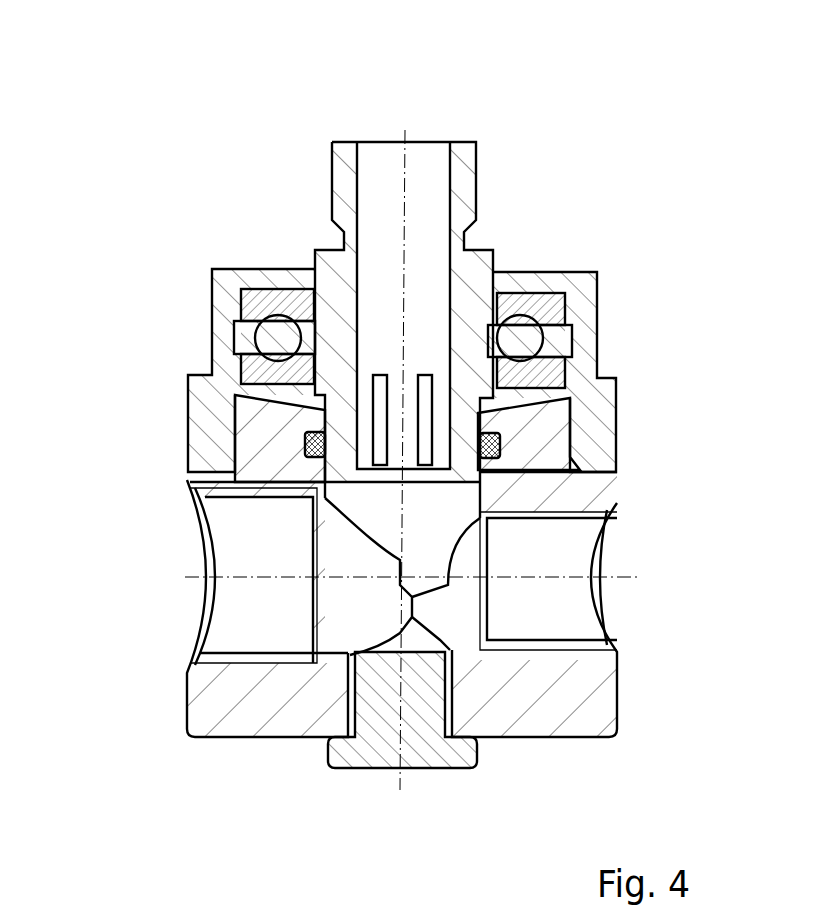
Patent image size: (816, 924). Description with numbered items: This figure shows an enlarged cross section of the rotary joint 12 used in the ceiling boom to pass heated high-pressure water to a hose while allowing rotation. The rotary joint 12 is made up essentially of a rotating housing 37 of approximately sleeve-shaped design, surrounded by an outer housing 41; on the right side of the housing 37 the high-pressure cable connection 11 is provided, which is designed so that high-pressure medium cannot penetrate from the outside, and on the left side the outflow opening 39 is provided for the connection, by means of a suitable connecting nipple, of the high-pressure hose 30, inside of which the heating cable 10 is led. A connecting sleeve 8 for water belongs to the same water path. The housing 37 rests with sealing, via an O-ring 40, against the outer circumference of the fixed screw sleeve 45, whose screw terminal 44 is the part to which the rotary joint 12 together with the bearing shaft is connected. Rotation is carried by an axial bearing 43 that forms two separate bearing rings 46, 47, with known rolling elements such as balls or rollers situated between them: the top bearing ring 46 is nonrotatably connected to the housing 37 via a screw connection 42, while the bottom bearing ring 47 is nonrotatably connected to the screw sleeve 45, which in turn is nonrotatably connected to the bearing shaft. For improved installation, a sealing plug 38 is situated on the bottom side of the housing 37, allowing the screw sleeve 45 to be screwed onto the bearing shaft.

The connecting sleeve (water) 8 is at (401, 143).
The heating cable 10 is at (652, 570).
The high-pressure cable connection 11 is at (575, 610).
The rotary joint 12 is at (692, 353).
The high-pressure hose 30 is at (170, 563).
The housing 37 is at (253, 720).
The sealing plug 38 is at (378, 745).
The outflow opening 39 is at (228, 607).
The O-ring 40 is at (493, 446).
The outer housing 41 is at (596, 392).
The screw connection 42 is at (585, 420).
The axial bearing 43 is at (522, 338).
The screw terminal 44 is at (346, 195).
The screw sleeve 45 is at (465, 183).
The bearing ring (top) 46 is at (272, 300).
The bearing ring (bottom) 47 is at (264, 370).